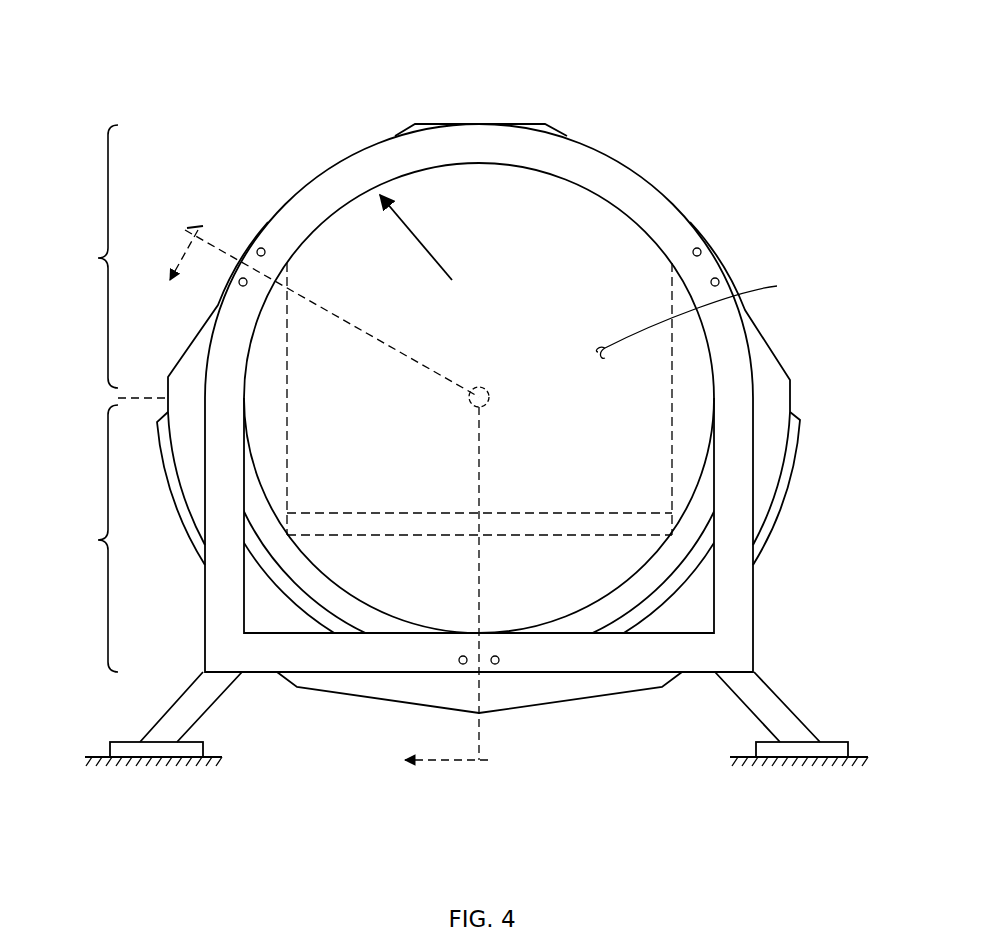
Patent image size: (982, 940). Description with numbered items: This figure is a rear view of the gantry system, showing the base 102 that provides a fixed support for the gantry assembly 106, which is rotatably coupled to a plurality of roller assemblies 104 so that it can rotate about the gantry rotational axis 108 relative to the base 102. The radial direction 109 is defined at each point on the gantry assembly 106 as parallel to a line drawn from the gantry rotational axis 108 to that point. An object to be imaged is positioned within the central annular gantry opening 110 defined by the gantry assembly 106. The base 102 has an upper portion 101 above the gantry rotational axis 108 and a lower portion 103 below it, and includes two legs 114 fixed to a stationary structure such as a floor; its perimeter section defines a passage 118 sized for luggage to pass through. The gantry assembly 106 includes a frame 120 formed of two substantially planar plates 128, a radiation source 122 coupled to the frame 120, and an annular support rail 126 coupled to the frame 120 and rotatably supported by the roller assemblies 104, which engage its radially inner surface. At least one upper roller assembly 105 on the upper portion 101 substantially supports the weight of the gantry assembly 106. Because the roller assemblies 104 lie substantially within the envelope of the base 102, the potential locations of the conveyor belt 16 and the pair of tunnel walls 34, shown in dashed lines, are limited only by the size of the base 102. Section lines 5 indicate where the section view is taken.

The section lines 5- 5 is at (334, 493).
The conveyor belt 16 is at (672, 517).
The tunnel walls 34 is at (296, 353).
The upper portion 101 is at (103, 261).
The base 102 is at (628, 193).
The lower portion 103 is at (77, 538).
The roller assemblies 104 is at (243, 235).
The upper roller assembly 105 is at (725, 250).
The gantry assembly 106 is at (155, 386).
The gantry rotational axis 108 is at (479, 388).
The radial direction 109 is at (427, 247).
The gantry opening 110 is at (710, 313).
The legs 114 is at (153, 722).
The passage 118 is at (548, 594).
The frame 120 is at (772, 384).
The radiation source 122 is at (415, 124).
The support rail 126 is at (287, 584).
The plates 128 is at (770, 429).